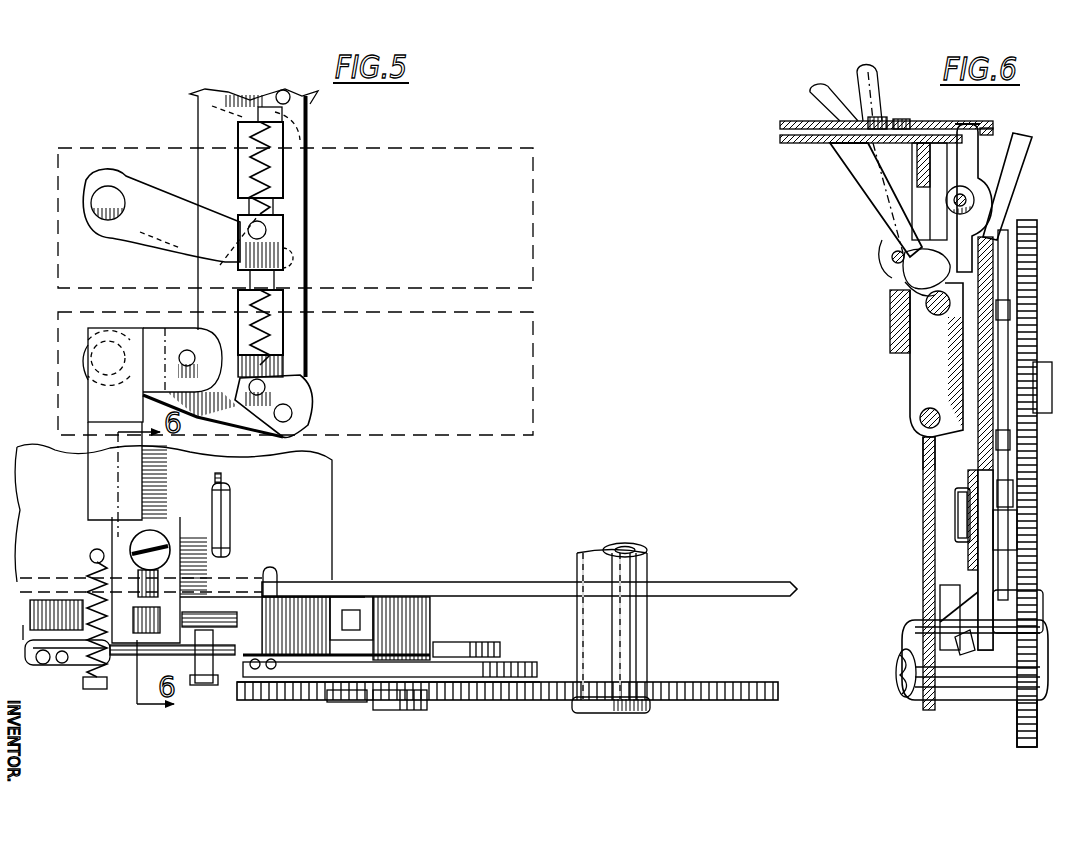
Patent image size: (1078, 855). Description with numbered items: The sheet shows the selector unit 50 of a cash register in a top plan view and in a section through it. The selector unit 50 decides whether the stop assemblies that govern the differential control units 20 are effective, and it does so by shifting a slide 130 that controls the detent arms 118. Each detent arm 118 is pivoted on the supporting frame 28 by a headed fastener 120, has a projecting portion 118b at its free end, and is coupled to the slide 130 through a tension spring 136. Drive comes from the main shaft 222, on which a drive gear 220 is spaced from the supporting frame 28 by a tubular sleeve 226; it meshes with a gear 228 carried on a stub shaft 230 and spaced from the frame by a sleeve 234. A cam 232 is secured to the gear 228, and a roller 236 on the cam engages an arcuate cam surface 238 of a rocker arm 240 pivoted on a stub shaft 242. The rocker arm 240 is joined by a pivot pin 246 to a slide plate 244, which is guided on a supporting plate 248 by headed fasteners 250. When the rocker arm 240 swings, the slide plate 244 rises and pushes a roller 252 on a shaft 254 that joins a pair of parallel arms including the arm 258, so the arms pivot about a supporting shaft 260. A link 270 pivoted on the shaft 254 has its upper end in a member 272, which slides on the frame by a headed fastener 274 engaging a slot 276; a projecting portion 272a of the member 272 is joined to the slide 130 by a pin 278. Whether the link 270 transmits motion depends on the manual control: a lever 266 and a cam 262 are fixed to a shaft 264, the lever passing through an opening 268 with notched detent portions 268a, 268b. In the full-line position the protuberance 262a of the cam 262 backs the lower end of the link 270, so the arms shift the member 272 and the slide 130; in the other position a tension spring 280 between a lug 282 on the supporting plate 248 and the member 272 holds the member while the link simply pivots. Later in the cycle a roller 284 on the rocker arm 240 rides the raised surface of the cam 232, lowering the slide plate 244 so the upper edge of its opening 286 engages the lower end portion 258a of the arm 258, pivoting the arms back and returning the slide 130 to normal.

In FIG. 5, the differential control unit 20 is at (490, 157).
In FIG. 5, the supporting frame 28 is at (362, 584).
In FIG. 6, the supporting frame 28 is at (780, 140).
In FIG. 5, the selector unit 50 is at (66, 692).
In FIG. 6, the selector unit 50 is at (1053, 173).
In FIG. 5, the detent arm 118 is at (167, 200).
In FIG. 5, the projecting portion 118b is at (312, 382).
In FIG. 5, the headed fastener 120 is at (110, 213).
In FIG. 5, the slide 130 is at (304, 132).
In FIG. 5, the tension spring 136 is at (270, 179).
In FIG. 5, the drive gear 220 is at (668, 700).
In FIG. 6, the drive gear 220 is at (1032, 723).
In FIG. 5, the main shaft 222 is at (624, 546).
In FIG. 6, the main shaft 222 is at (897, 668).
In FIG. 5, the tubular sleeve 226 is at (632, 643).
In FIG. 6, the tubular sleeve 226 is at (948, 586).
In FIG. 5, the gear 228 is at (448, 690).
In FIG. 6, the gear 228 is at (1037, 279).
In FIG. 5, the stub shaft 230 is at (397, 703).
In FIG. 6, the stub shaft 230 is at (1075, 352).
In FIG. 5, the cam 232 is at (565, 643).
In FIG. 6, the cam 232 is at (1010, 311).
In FIG. 5, the sleeve 234 is at (430, 612).
In FIG. 5, the roller 236 is at (325, 700).
In FIG. 5, the arcuate cam surface 238 is at (450, 647).
In FIG. 5, the rocker arm 240 is at (500, 653).
In FIG. 6, the rocker arm 240 is at (985, 650).
In FIG. 6, the stub shaft 242 is at (1037, 608).
In FIG. 5, the slide plate 244 is at (187, 667).
In FIG. 6, the slide plate 244 is at (970, 563).
In FIG. 6, the pivot pin 246 is at (960, 640).
In FIG. 5, the supporting plate 248 is at (25, 645).
In FIG. 6, the supporting plate 248 is at (1013, 497).
In FIG. 5, the headed fastener 250 is at (210, 612).
In FIG. 6, the headed fastener 250 is at (960, 520).
In FIG. 6, the roller 252 is at (997, 211).
In FIG. 6, the shaft 254 is at (977, 193).
In FIG. 6, the arm 258 is at (918, 375).
In FIG. 6, the lower end portion 258a is at (928, 447).
In FIG. 6, the supporting shaft 260 is at (924, 306).
In FIG. 6, the cam 262 is at (878, 262).
In FIG. 6, the protuberance 262a is at (917, 290).
In FIG. 6, the shaft 264 is at (888, 251).
In FIG. 5, the lever 266 is at (223, 483).
In FIG. 6, the lever 266 is at (850, 177).
In FIG. 5, the opening 268 is at (228, 518).
In FIG. 5, the notched detent portion 268a is at (212, 503).
In FIG. 5, the notched detent portion 268b is at (232, 541).
In FIG. 5, the link 270 is at (137, 643).
In FIG. 6, the link 270 is at (972, 148).
In FIG. 5, the member 272 is at (93, 466).
In FIG. 6, the member 272 is at (1017, 109).
In FIG. 5, the projecting portion 272a is at (192, 337).
In FIG. 5, the headed fastener 274 is at (138, 538).
In FIG. 6, the headed fastener 274 is at (922, 104).
In FIG. 5, the slot 276 is at (137, 573).
In FIG. 6, the slot 276 is at (975, 123).
In FIG. 5, the pin 278 is at (190, 352).
In FIG. 5, the tension spring 280 is at (92, 597).
In FIG. 5, the lug 282 is at (117, 688).
In FIG. 6, the roller 284 is at (1010, 527).
In FIG. 6, the opening 286 is at (958, 487).